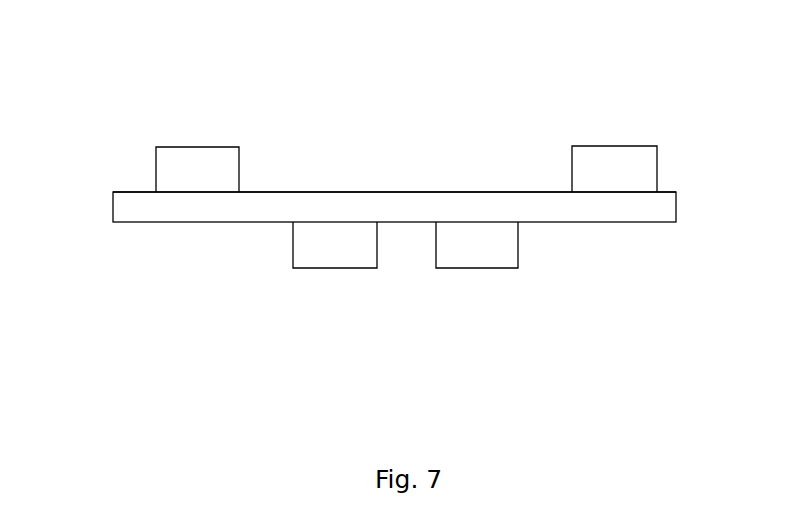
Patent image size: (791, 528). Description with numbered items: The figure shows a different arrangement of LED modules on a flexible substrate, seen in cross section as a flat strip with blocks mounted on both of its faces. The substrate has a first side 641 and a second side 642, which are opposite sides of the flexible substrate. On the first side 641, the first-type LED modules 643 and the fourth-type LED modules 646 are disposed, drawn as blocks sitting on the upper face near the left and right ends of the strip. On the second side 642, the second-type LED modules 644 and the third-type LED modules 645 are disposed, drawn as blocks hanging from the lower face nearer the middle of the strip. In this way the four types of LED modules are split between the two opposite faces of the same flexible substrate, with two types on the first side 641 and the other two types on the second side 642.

The first side of the flexible substrate 641 is at (268, 192).
The second side of the flexible substrate 642 is at (235, 222).
The first-type LED modules 643 is at (178, 150).
The second-type LED modules 644 is at (345, 263).
The third-type LED modules 645 is at (498, 263).
The fourth-type LED modules 646 is at (613, 159).